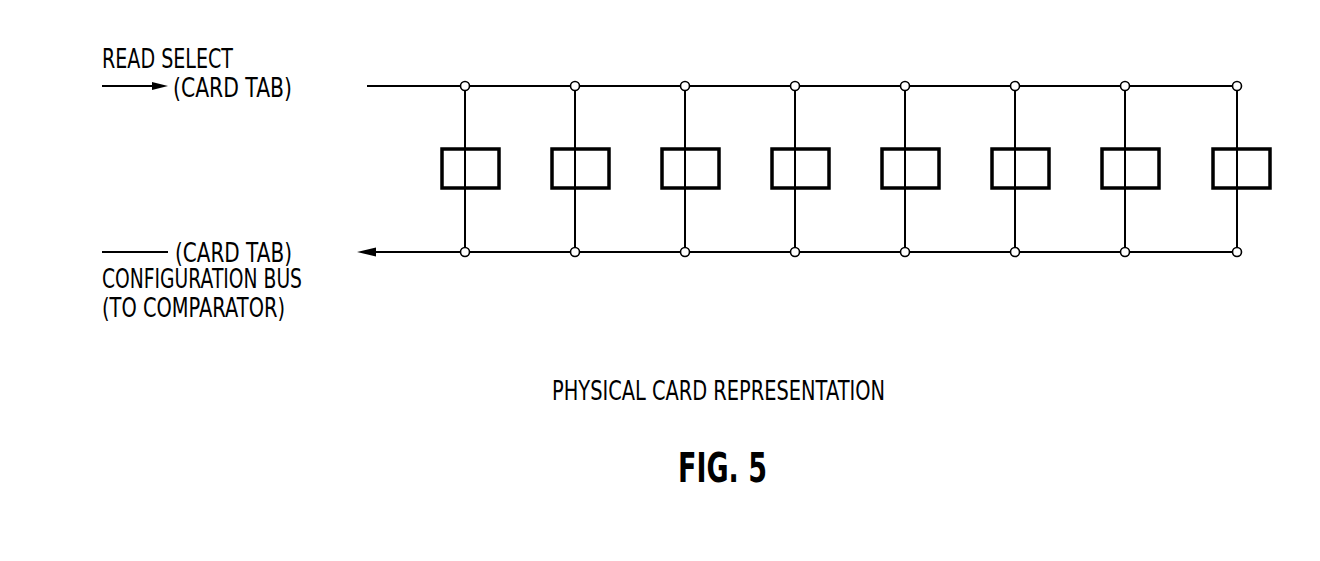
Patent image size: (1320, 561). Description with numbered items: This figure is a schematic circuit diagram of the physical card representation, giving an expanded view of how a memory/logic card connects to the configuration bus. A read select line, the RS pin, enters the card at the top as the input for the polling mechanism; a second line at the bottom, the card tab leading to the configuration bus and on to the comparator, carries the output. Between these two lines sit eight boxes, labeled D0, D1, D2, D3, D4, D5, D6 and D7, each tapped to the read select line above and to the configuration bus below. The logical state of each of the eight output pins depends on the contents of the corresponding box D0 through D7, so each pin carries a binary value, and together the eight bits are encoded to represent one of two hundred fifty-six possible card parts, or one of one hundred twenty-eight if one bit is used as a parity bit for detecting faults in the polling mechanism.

The box D0 is at (470, 169).
The box D1 is at (580, 169).
The box D2 is at (690, 169).
The box D3 is at (800, 169).
The box D4 is at (910, 169).
The box D5 is at (1020, 169).
The box D6 is at (1130, 169).
The box D7 is at (1241, 169).